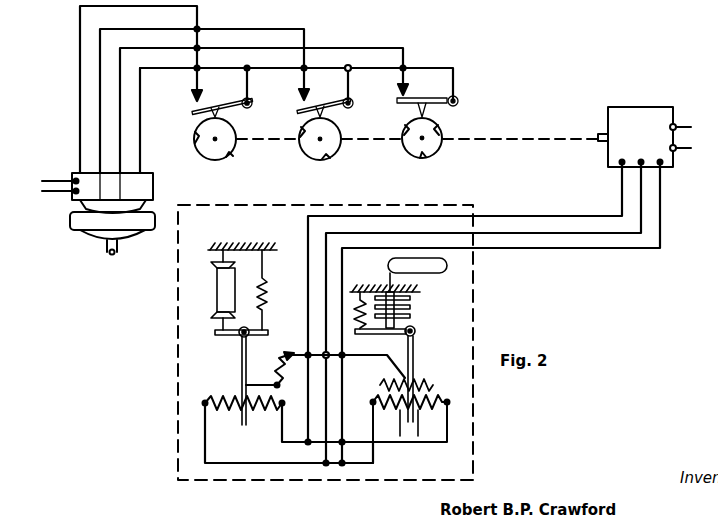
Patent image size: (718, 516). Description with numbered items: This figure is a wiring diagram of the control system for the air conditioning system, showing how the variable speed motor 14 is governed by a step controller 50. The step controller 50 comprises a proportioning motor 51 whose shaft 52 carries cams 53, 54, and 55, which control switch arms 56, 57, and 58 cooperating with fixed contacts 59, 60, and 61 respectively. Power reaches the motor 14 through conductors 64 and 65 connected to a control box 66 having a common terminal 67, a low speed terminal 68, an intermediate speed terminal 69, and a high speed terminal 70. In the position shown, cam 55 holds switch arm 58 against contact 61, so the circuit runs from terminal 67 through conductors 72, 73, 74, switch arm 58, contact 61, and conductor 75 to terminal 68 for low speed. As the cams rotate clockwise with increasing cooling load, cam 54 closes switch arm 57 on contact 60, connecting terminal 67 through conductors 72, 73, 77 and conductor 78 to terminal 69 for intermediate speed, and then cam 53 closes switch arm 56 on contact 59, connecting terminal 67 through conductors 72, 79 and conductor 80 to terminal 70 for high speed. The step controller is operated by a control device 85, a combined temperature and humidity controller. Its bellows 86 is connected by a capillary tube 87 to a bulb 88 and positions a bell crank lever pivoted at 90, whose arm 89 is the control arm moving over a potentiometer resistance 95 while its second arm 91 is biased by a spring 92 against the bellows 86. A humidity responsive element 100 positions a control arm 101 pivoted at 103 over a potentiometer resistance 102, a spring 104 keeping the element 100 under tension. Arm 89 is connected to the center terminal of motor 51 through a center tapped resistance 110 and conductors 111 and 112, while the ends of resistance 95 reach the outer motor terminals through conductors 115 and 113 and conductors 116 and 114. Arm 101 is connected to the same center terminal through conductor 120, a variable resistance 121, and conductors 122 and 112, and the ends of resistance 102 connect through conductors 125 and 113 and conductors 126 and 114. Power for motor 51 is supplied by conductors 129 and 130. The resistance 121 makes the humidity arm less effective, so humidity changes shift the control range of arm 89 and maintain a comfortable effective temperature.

The motor 14 is at (80, 224).
The step controller 50 is at (541, 88).
The motor 51 is at (640, 137).
The shaft 52 is at (602, 141).
The cam 53 is at (237, 150).
The cam 54 is at (324, 157).
The cam 55 is at (428, 155).
The switch arm 56 is at (222, 102).
The switch arm 57 is at (332, 101).
The switch arm 58 is at (426, 100).
The fixed contact 59 is at (194, 101).
The fixed contact 60 is at (302, 99).
The fixed contact 61 is at (399, 93).
The conductor 64 is at (45, 180).
The conductor 65 is at (45, 192).
The control box 66 is at (154, 187).
The common terminal 67 is at (150, 173).
The low speed terminal 68 is at (123, 186).
The intermediate speed terminal 69 is at (101, 186).
The high speed terminal 70 is at (80, 171).
The conductor 72 is at (141, 128).
The conductor 73 is at (279, 70).
The conductor 74 is at (428, 68).
The conductor 75 is at (334, 48).
The conductor 77 is at (356, 96).
The conductor 78 is at (220, 29).
The conductor 79 is at (254, 97).
The conductor 80 is at (80, 80).
The control device 85 is at (170, 394).
The bellows 86 is at (412, 308).
The capillary tube 87 is at (389, 276).
The bulb 88 is at (448, 270).
The arm 89 is at (414, 362).
The pivot 90 is at (416, 333).
The second arm 91 is at (384, 335).
The spring 92 is at (357, 298).
The potentiometer resistance 95 is at (410, 418).
The humidity responsive element 100 is at (217, 294).
The control arm 101 is at (240, 372).
The potentiometer resistance 102 is at (229, 410).
The pivot 103 is at (245, 328).
The spring 104 is at (268, 294).
The center tapped resistance 110 is at (378, 385).
The conductor 111 is at (368, 356).
The conductor 112 is at (546, 233).
The conductor 113 is at (540, 216).
The conductor 114 is at (617, 248).
The conductor 115 is at (398, 443).
The conductor 116 is at (350, 466).
The conductor 120 is at (259, 383).
The variable resistance 121 is at (283, 348).
The conductor 122 is at (294, 371).
The conductor 125 is at (281, 443).
The conductor 126 is at (256, 466).
The conductor 129 is at (681, 127).
The conductor 130 is at (681, 150).